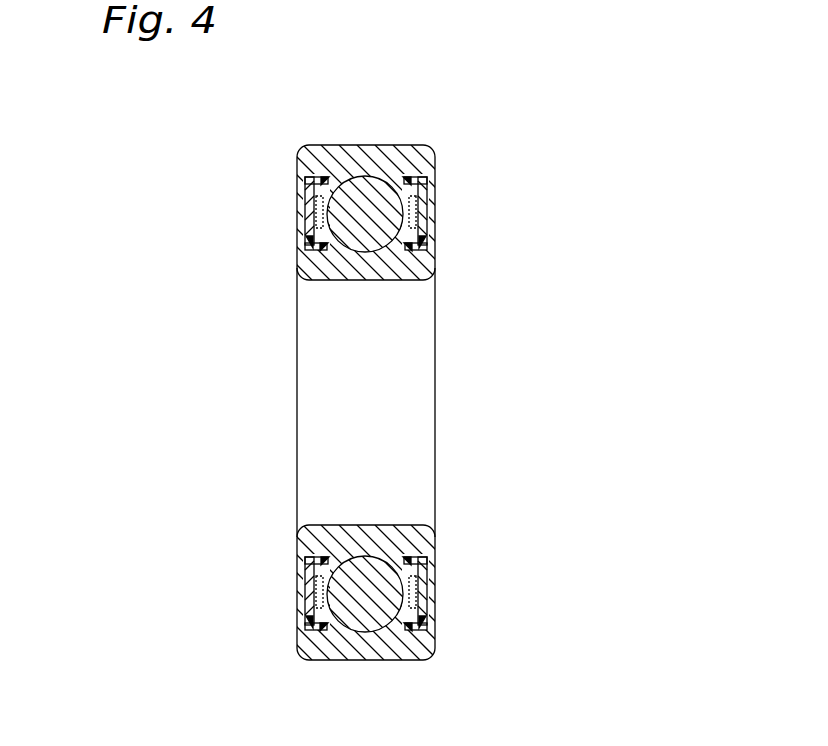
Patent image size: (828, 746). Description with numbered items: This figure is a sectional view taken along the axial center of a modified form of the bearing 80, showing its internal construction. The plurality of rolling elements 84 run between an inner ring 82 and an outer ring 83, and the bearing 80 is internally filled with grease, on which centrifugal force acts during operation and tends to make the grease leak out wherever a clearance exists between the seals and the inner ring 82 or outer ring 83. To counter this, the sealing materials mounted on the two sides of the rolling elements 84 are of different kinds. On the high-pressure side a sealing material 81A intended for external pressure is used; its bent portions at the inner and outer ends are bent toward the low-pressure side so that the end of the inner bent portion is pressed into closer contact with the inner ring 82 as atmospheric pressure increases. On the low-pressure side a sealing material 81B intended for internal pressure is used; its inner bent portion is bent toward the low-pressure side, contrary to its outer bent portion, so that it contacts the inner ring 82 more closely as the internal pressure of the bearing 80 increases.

The bearing 80 is at (287, 143).
The sealing material intended for external pressure 81A is at (410, 193).
The sealing material intended for internal pressure 81B is at (308, 196).
The inner ring 82 is at (394, 262).
The outer ring 83 is at (378, 156).
The rolling elements 84 is at (360, 205).